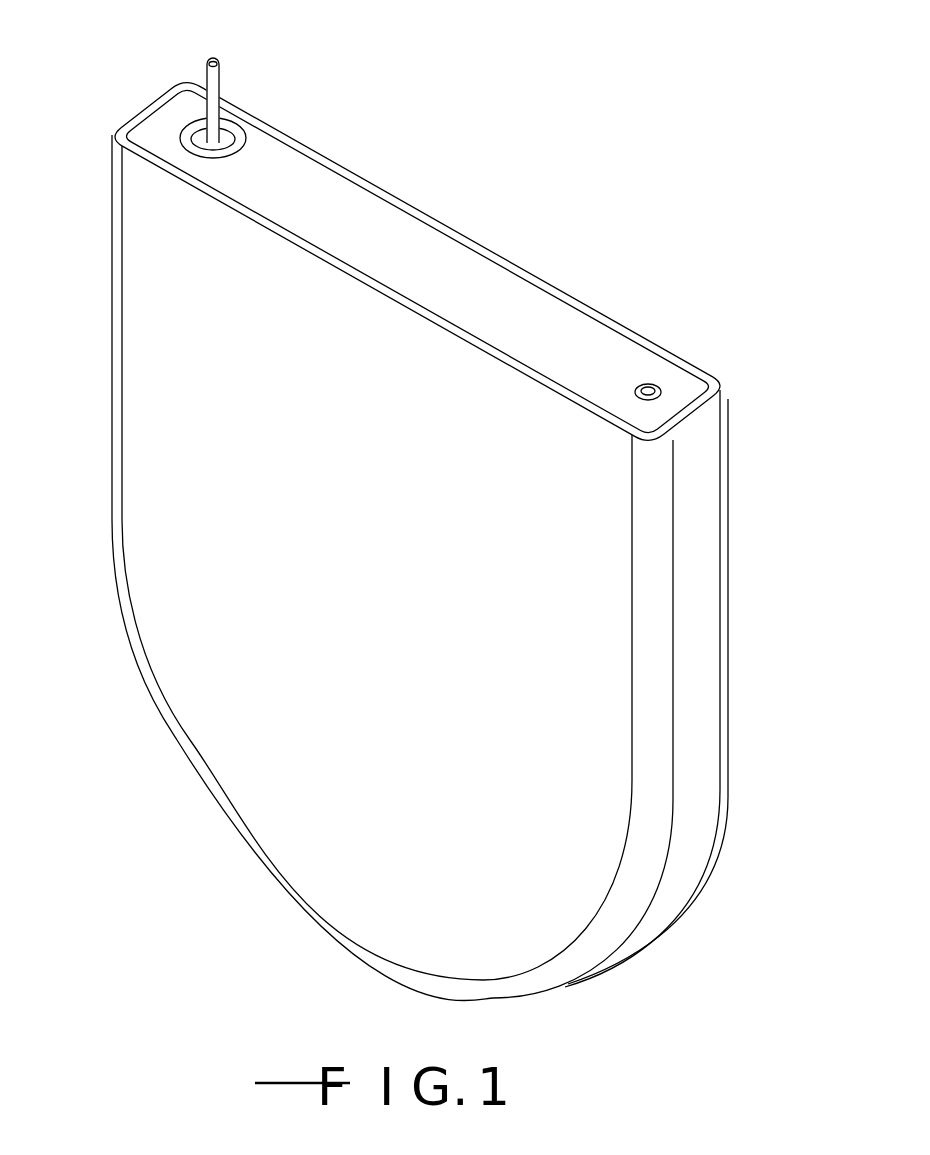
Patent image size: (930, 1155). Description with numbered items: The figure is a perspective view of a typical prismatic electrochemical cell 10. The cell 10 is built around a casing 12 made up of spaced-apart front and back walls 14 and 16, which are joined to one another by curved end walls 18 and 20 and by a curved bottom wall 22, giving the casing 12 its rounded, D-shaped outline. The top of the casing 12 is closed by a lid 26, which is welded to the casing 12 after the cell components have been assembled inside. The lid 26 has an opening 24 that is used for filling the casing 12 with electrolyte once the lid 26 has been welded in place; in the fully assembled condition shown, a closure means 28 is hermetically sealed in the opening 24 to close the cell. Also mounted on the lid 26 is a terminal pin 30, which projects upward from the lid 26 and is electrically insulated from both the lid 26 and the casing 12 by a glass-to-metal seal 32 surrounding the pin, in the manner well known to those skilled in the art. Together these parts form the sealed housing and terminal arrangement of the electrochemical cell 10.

The prismatic electrochemical cell 10 is at (407, 507).
The casing 12 is at (183, 330).
The front wall 14 is at (292, 765).
The back wall 16 is at (723, 480).
The curved end wall 18 is at (702, 638).
The curved end wall 20 is at (113, 228).
The curved bottom wall 22 is at (328, 925).
The opening 24 is at (660, 388).
The lid 26 is at (380, 233).
The closure means 28 is at (646, 383).
The terminal pin 30 is at (222, 70).
The glass-to-metal seal 32 is at (198, 137).